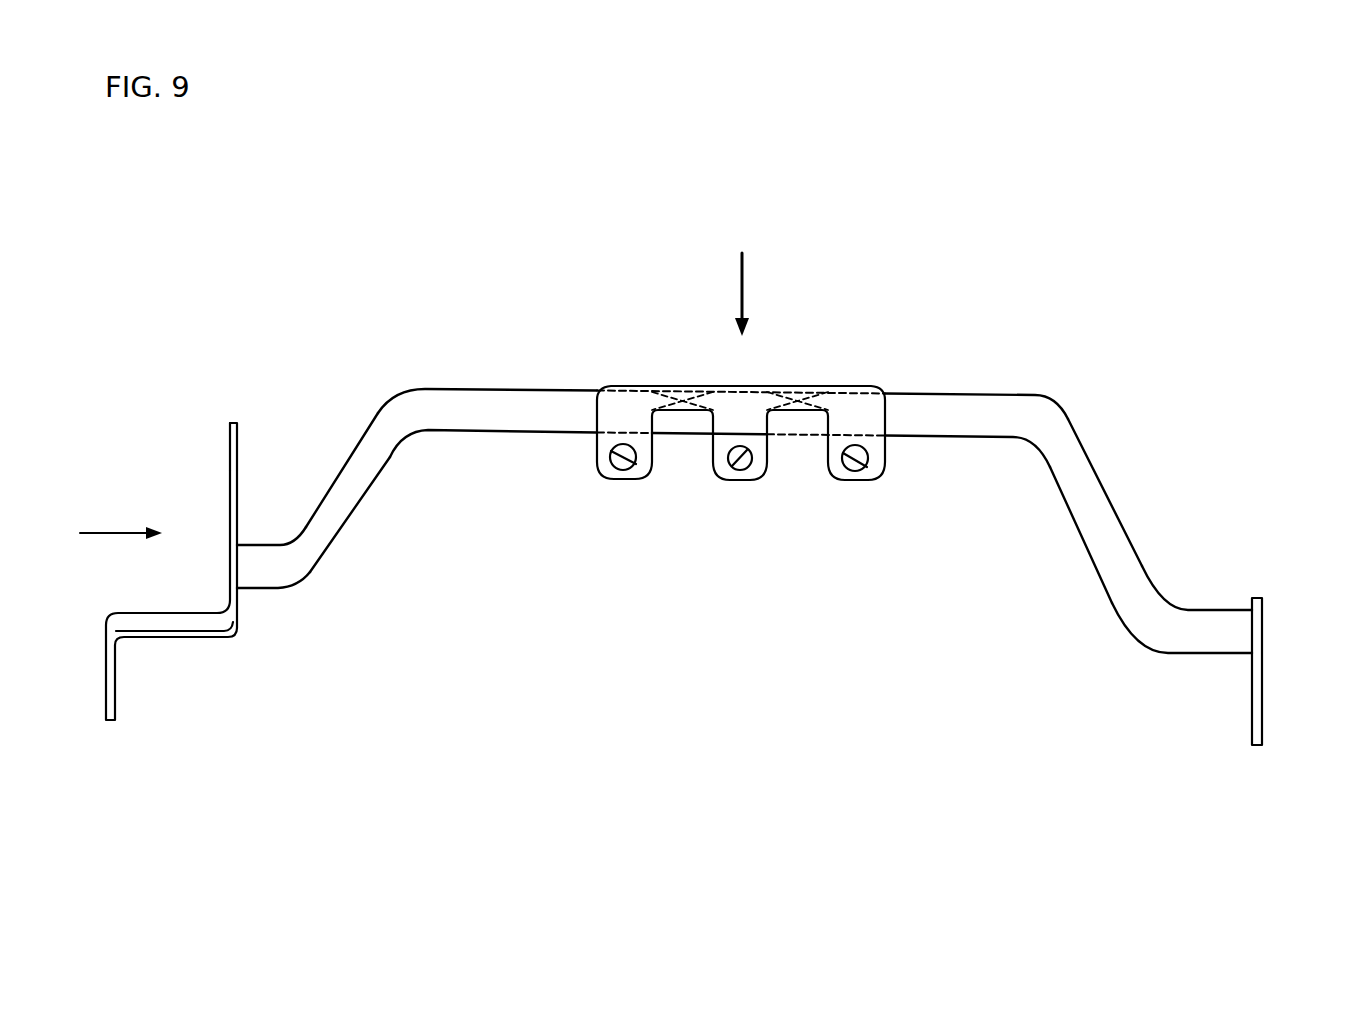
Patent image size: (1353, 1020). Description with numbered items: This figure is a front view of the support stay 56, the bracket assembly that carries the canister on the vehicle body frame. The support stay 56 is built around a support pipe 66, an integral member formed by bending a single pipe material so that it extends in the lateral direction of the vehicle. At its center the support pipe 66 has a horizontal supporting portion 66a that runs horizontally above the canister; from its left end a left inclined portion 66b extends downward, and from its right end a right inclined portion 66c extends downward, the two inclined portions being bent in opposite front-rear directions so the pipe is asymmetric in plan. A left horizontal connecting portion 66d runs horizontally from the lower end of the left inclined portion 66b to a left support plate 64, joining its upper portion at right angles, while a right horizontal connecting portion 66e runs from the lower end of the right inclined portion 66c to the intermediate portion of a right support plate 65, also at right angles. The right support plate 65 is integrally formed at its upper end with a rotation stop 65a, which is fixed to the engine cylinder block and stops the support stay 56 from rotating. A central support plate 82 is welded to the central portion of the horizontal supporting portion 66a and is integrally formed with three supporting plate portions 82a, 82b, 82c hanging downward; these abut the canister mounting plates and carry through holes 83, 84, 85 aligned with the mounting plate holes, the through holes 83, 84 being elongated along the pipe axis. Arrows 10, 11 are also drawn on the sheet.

The vehicle front direction 10 is at (120, 509).
The vehicle downward direction 11 is at (748, 277).
The support stay 56 is at (782, 463).
The left support plate 64 is at (1258, 625).
The right support plate 65 is at (219, 535).
The rotation stop 65a is at (230, 423).
The support pipe 66 is at (782, 474).
The horizontal supporting portion 66a is at (459, 397).
The left inclined portion 66b is at (1092, 522).
The right inclined portion 66c is at (363, 460).
The left horizontal connecting portion 66d is at (1217, 627).
The right horizontal connecting portion 66e is at (293, 560).
The central support plate 82 is at (735, 456).
The supporting plate portion 82a is at (880, 455).
The supporting plate portion 82b is at (603, 457).
The supporting plate portion 82c is at (718, 458).
The through hole 83 is at (862, 471).
The through hole 84 is at (623, 470).
The through hole 85 is at (738, 470).